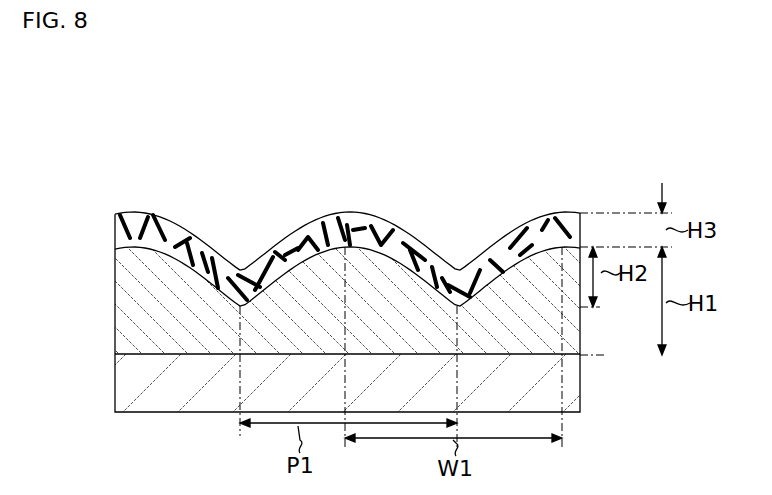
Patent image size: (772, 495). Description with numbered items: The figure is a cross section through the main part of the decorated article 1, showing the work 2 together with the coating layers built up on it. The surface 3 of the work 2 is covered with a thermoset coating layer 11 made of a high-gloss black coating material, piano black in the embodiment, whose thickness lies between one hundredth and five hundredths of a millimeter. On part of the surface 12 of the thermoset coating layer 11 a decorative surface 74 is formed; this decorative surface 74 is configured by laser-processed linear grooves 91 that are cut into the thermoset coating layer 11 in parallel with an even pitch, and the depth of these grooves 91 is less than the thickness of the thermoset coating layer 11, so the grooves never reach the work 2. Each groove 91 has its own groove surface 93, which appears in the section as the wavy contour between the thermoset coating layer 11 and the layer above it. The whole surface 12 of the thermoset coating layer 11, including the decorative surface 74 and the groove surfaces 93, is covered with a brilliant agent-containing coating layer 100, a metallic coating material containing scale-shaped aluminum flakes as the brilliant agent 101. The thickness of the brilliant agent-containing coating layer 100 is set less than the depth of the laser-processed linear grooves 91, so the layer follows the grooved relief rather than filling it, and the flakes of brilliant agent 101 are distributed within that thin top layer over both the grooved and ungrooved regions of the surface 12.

The laminate / molded article 1 is at (83, 142).
The work 2 is at (580, 375).
The surface of the work 3 is at (170, 354).
The thermoset coating layer 11 is at (131, 293).
The surface of the thermoset coating layer 12 is at (343, 240).
The decorative surface 74 is at (347, 235).
The laser-processed linear grooves 91 is at (450, 292).
The surface of the laser-processed linear groove 93 is at (280, 257).
The brilliant agent-containing coating layer 100 is at (114, 221).
The brilliant agent 101 is at (210, 196).